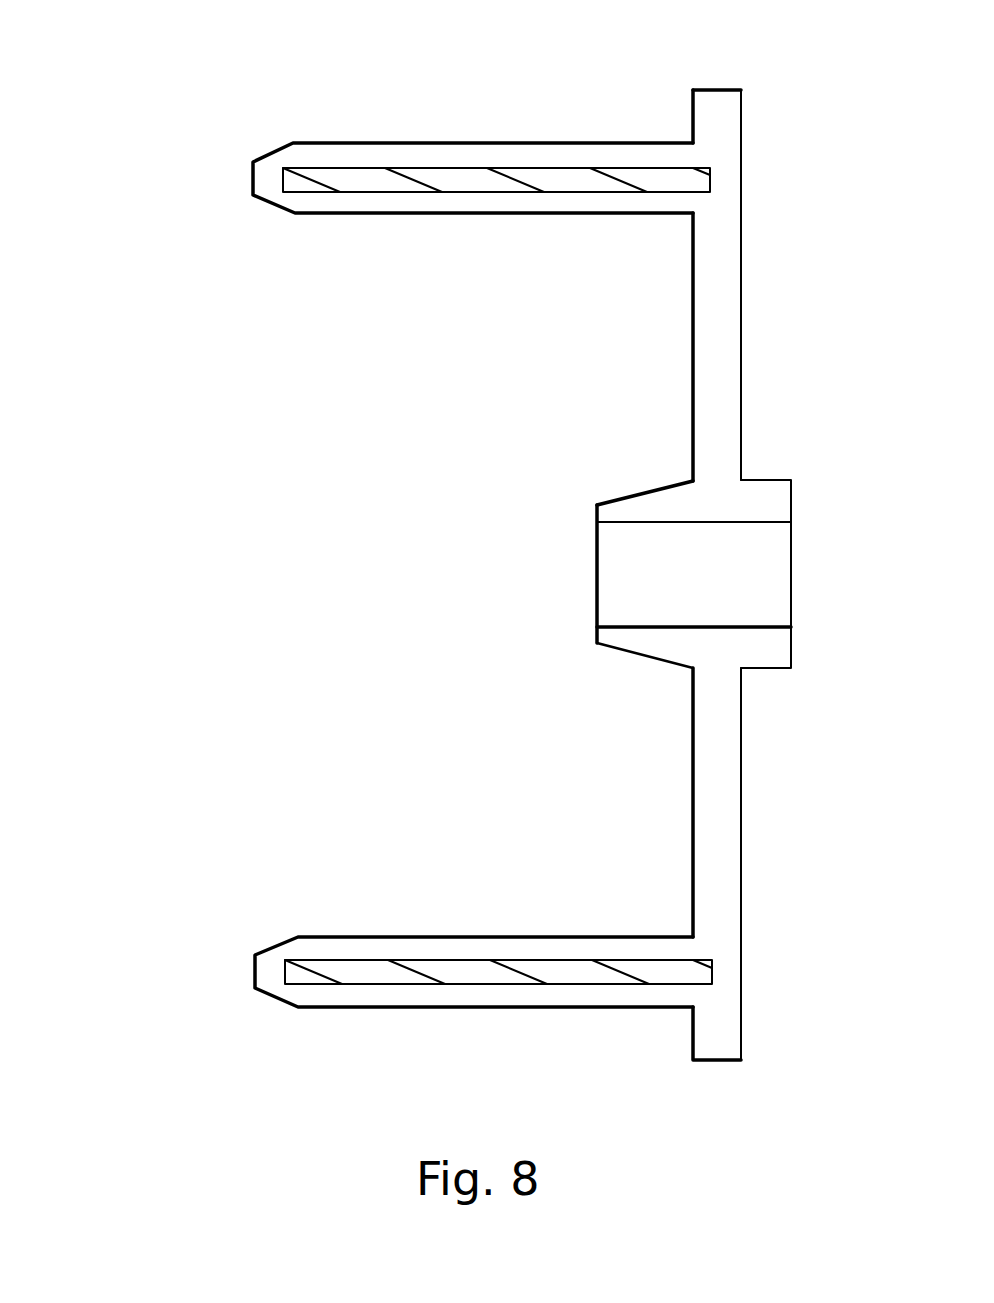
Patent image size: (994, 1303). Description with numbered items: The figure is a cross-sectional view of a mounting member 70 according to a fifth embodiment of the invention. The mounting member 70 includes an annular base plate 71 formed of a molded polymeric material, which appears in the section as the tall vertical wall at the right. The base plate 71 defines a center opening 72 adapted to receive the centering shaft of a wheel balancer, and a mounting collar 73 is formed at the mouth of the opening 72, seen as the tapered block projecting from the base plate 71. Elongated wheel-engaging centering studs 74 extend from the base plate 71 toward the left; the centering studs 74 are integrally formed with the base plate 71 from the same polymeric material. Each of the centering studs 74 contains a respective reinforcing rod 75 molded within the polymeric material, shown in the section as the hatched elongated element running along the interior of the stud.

The mounting member 70 is at (133, 163).
The annular base plate 71 is at (722, 365).
The center opening 72 is at (758, 522).
The mounting collar 73 is at (652, 643).
The centering stud 74 is at (500, 215).
The reinforcing rod 75 is at (388, 186).